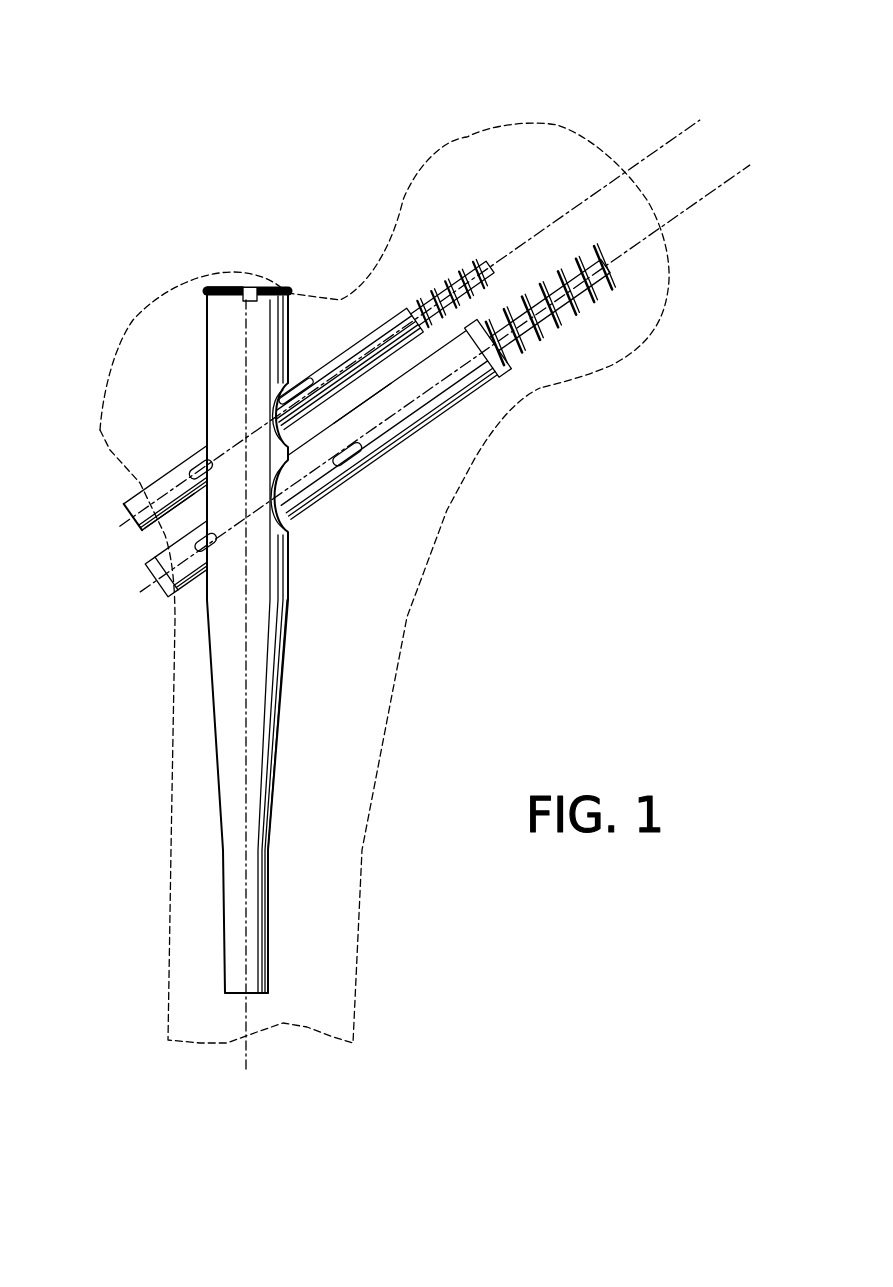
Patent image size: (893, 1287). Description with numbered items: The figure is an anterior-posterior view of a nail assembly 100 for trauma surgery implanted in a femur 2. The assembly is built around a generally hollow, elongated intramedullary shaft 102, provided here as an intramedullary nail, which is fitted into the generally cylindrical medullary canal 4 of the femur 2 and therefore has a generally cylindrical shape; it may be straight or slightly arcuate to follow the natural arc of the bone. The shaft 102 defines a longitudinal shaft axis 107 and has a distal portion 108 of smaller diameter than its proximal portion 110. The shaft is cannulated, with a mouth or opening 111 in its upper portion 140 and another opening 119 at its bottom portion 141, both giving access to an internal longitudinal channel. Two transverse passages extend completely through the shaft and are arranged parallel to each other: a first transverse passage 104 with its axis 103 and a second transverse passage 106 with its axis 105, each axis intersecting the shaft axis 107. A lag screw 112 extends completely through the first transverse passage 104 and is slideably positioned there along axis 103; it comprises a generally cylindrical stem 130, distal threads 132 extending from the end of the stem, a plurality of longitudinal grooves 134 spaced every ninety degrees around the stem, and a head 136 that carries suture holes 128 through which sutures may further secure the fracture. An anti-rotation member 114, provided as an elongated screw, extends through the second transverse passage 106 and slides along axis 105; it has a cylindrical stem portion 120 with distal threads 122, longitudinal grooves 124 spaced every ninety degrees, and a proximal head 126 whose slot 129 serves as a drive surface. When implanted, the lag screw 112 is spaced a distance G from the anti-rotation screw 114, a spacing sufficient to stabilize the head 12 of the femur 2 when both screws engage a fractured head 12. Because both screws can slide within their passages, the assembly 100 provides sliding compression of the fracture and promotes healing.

The nail assembly 100 is at (390, 560).
The femur 2 is at (172, 880).
The medullary canal 4 is at (221, 284).
The head 12 is at (567, 123).
The intramedullary shaft 102 is at (275, 287).
The axis 103 is at (712, 196).
The first transverse passage 104 is at (257, 572).
The axis 105 is at (679, 133).
The second transverse passage 106 is at (228, 425).
The longitudinal shaft axis 107 is at (246, 1063).
The distal portion 108 is at (268, 897).
The proximal portion 110 is at (203, 352).
The opening 111 is at (248, 298).
The lag screw 112 is at (506, 374).
The anti-rotation member 114 is at (385, 348).
The opening 119 is at (235, 996).
The stem portion 120 is at (358, 348).
The distal threads 122 is at (427, 297).
The longitudinal grooves 124 is at (318, 380).
The proximal head 126 is at (125, 510).
The suture holes 128 is at (157, 585).
The slot 129 is at (133, 535).
The stem 130 is at (393, 447).
The distal threads 132 is at (582, 318).
The longitudinal grooves 134 is at (315, 480).
The head 136 is at (170, 600).
The upper portion 140 is at (217, 307).
The bottom portion 141 is at (268, 955).
The distance G is at (406, 387).